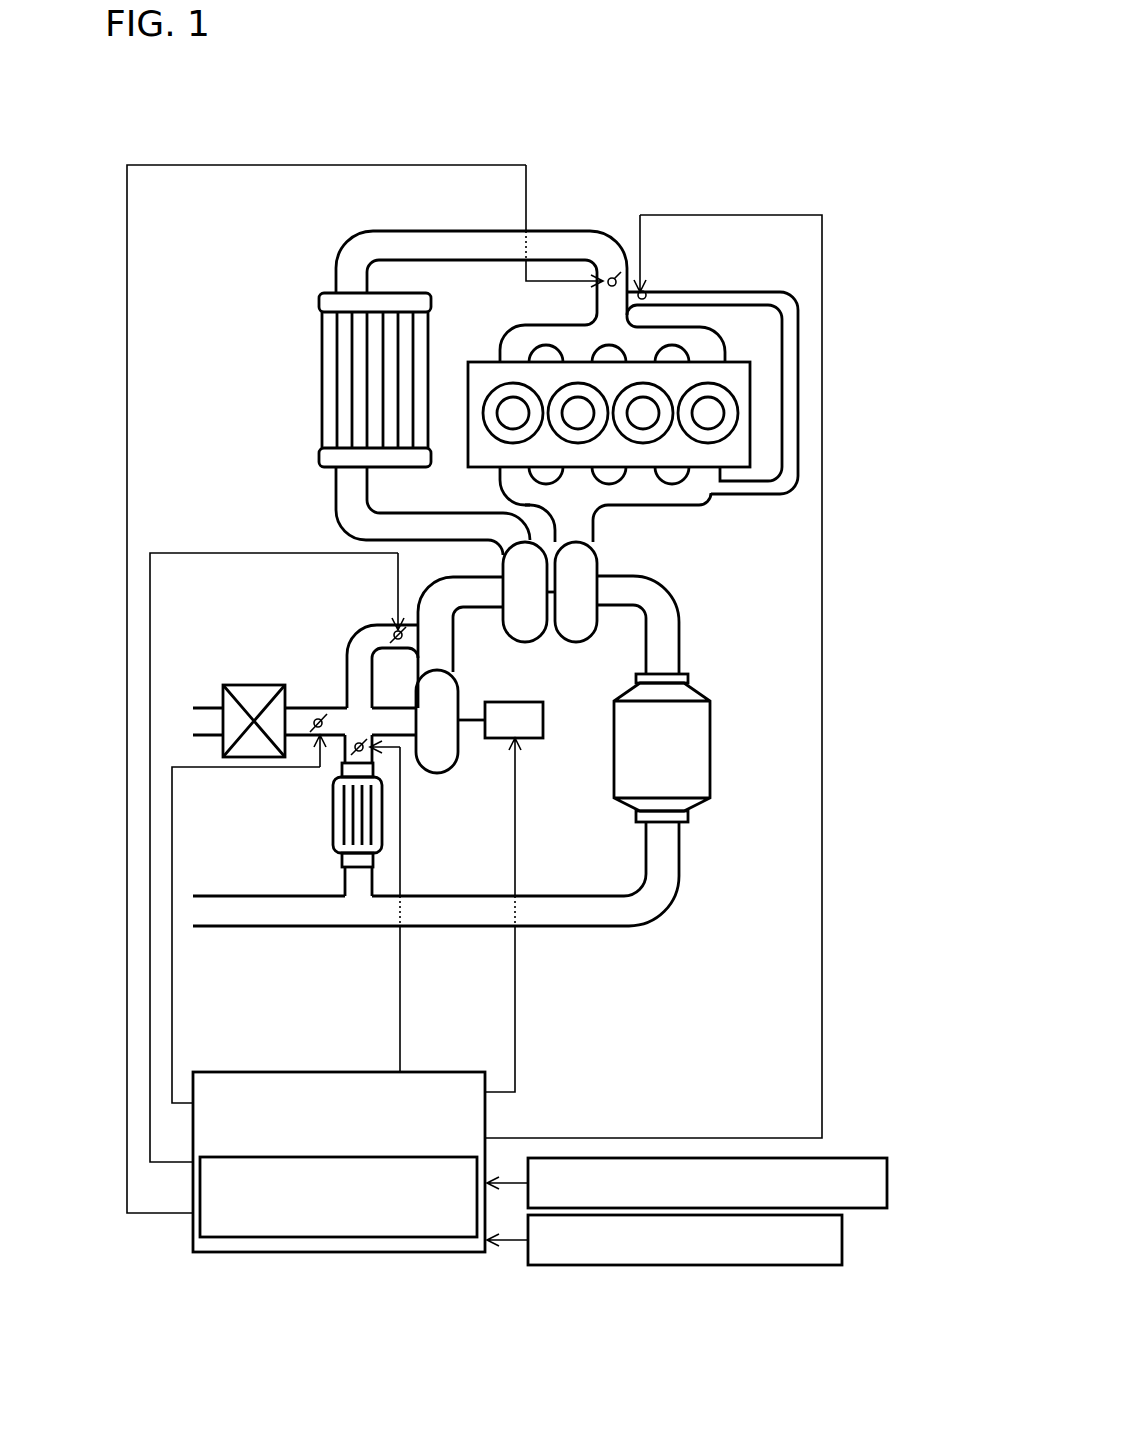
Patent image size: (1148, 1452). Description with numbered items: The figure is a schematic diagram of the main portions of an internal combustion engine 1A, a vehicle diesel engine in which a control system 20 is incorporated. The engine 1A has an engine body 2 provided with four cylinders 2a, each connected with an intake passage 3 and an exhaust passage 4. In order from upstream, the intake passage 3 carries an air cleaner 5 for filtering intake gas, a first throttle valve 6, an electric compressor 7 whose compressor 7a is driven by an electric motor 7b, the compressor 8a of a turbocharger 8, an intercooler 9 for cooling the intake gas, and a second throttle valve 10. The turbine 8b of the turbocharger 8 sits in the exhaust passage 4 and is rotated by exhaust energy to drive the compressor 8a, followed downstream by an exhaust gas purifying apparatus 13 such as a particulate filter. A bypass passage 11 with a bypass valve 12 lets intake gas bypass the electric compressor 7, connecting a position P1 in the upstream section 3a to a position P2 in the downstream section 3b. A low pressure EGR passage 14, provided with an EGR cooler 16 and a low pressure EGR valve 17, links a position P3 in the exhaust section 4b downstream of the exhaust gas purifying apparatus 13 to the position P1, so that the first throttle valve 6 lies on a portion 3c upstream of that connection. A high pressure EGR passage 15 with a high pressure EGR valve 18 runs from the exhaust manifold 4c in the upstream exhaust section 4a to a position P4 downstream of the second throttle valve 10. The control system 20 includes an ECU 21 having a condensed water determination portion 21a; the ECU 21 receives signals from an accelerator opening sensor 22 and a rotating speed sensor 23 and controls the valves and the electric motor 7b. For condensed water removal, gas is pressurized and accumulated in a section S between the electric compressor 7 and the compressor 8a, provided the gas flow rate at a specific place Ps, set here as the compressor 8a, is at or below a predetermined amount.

The internal combustion engine 1A is at (734, 186).
The engine body 2 is at (482, 361).
The cylinder 2a is at (512, 420).
The intake passage 3 is at (335, 516).
The section (first section) 3a is at (405, 740).
The section (second section) 3b is at (430, 586).
The portion 3c is at (318, 718).
The exhaust passage 4 is at (681, 644).
The section 4a is at (592, 525).
The section 4b is at (582, 928).
The exhaust manifold 4c is at (693, 499).
The air cleaner 5 is at (253, 684).
The first throttle valve 6 is at (312, 716).
The electric compressor 7 is at (493, 881).
The compressor 7a is at (448, 773).
The electric motor 7b is at (528, 742).
The turbocharger 8 is at (552, 649).
The compressor 8a is at (526, 643).
The turbine 8b is at (578, 613).
The intercooler 9 is at (318, 395).
The second throttle valve 10 is at (611, 276).
The bypass passage 11 is at (350, 648).
The bypass valve 12 is at (392, 637).
The exhaust gas purifying apparatus 13 is at (705, 748).
The low pressure EGR passage 14 is at (345, 882).
The high pressure EGR passage 15 is at (760, 495).
The EGR cooler 16 is at (333, 836).
The low pressure EGR valve 17 is at (355, 753).
The high pressure EGR valve 18 is at (647, 295).
The control system 20 is at (540, 1147).
The electronic control unit (ECU) 21 is at (245, 1071).
The condensed water determination portion 21a is at (323, 1238).
The accelerator opening sensor 22 is at (855, 1157).
The rotating speed sensor 23 is at (738, 1267).
The position P1 is at (368, 709).
The position P2 is at (484, 696).
The position P3 is at (368, 924).
The position P4 is at (595, 302).
The specific place Ps is at (518, 576).
The section S is at (458, 611).